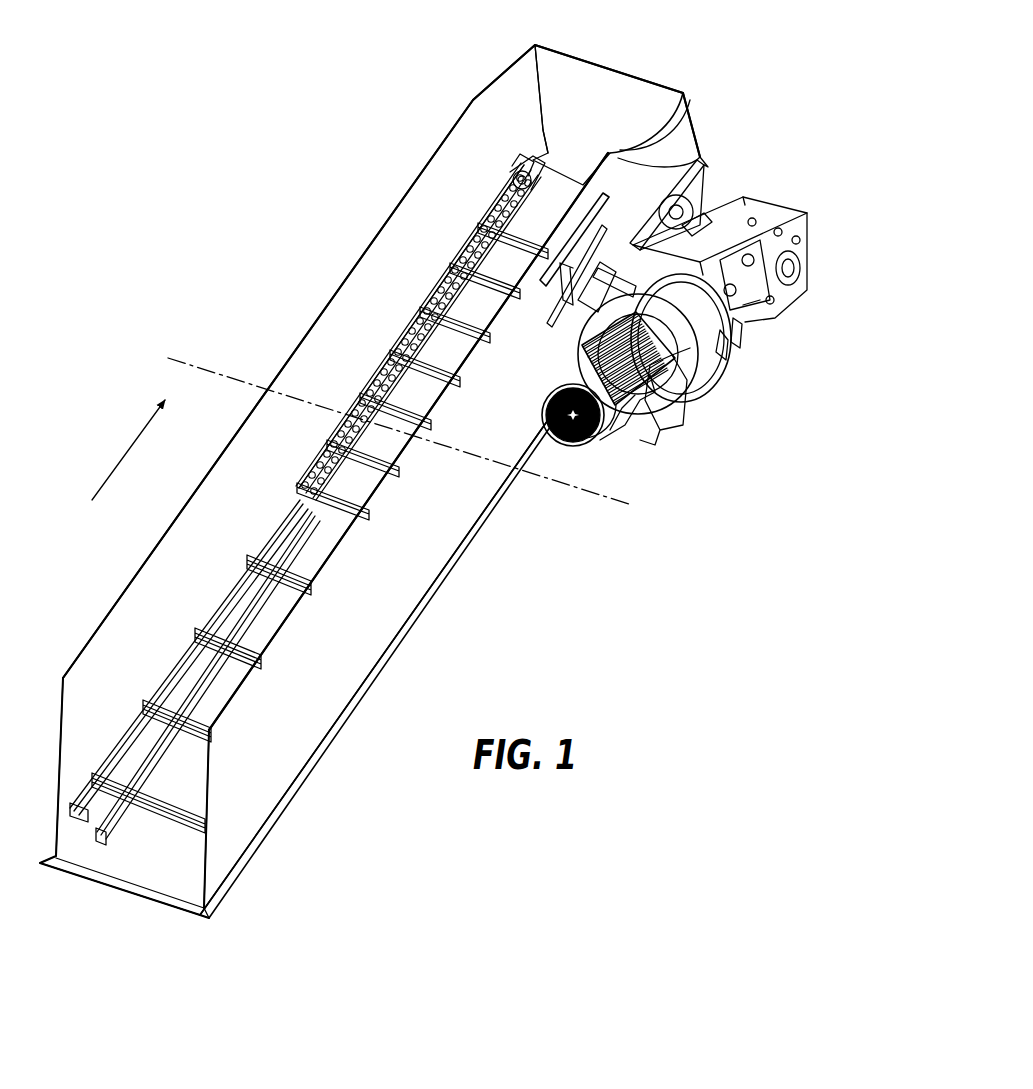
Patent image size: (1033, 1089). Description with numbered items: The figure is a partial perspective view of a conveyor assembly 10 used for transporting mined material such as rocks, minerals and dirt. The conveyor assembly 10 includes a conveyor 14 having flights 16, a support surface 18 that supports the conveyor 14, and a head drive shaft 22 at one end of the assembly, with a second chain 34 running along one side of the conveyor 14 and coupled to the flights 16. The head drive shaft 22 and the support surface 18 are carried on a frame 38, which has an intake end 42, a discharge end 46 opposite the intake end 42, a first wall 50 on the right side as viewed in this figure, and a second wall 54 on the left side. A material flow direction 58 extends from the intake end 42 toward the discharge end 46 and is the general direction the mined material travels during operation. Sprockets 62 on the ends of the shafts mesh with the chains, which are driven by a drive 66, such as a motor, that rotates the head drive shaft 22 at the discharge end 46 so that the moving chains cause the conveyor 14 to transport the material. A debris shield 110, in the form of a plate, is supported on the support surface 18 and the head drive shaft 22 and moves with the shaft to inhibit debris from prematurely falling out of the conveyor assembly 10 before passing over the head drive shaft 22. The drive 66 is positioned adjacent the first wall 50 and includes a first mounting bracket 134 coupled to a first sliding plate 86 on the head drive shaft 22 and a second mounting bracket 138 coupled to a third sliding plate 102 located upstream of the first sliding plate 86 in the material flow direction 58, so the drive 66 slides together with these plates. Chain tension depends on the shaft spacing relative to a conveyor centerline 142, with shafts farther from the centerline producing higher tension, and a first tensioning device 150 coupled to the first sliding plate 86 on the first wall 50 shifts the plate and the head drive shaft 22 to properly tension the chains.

The conveyor assembly 10 is at (262, 236).
The conveyor 14 is at (176, 588).
The flights 16 is at (453, 360).
The support surface 18 is at (376, 470).
The head drive shaft 22 is at (517, 158).
The second chain 34 is at (382, 363).
The frame 38 is at (314, 701).
The intake end 42 is at (106, 899).
The discharge end 46 is at (631, 50).
The first wall 50 is at (234, 800).
The second wall 54 is at (99, 690).
The material flow direction 58 is at (125, 453).
The sprockets 62 is at (512, 187).
The drive 66 is at (735, 371).
The first sliding plate 86 is at (665, 227).
The third sliding plate 102 is at (585, 266).
The debris shield 110 is at (560, 213).
The first mounting bracket 134 is at (692, 222).
The second mounting bracket 138 is at (583, 333).
The conveyor centerline 142 is at (202, 367).
The first tensioning device 150 is at (777, 283).